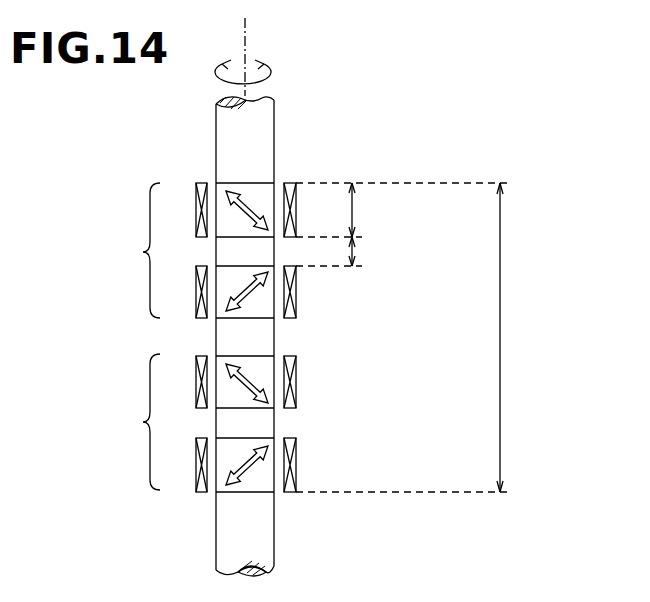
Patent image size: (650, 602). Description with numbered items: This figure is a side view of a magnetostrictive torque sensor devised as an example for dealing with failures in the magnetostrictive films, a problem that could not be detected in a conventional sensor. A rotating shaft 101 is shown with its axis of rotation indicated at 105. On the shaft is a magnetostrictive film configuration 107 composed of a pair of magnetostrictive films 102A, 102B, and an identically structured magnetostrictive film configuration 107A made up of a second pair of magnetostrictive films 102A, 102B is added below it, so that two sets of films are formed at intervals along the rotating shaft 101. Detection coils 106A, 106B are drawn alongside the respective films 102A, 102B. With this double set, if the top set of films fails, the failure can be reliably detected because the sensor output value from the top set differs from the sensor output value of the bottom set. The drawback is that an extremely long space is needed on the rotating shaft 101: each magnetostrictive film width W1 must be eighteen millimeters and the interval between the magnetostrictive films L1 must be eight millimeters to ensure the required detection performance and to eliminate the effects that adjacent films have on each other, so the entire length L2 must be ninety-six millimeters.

The rotating shaft 101 is at (262, 117).
The rotation axis / direction of rotation 105 is at (270, 66).
The magnetostrictive film 102A is at (258, 196).
The magnetostrictive film 102B is at (259, 310).
The first detection coil 106A is at (297, 210).
The second detection coil 106B is at (297, 292).
The magnetostrictive film configuration 107 is at (143, 251).
The magnetostrictive film configuration 107A is at (143, 421).
The magnetostrictive film width W1 is at (354, 210).
The interval between the magnetostrictive films L1 is at (354, 252).
The entire length L2 is at (502, 335).